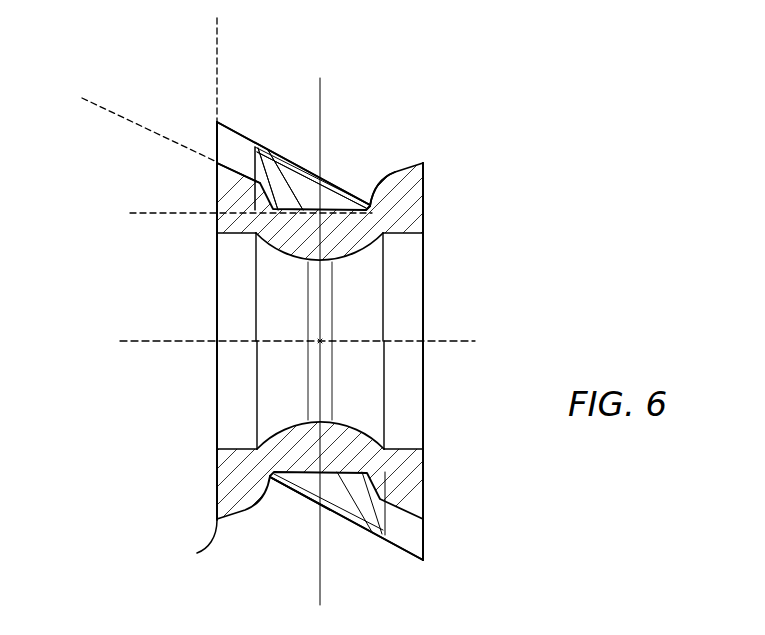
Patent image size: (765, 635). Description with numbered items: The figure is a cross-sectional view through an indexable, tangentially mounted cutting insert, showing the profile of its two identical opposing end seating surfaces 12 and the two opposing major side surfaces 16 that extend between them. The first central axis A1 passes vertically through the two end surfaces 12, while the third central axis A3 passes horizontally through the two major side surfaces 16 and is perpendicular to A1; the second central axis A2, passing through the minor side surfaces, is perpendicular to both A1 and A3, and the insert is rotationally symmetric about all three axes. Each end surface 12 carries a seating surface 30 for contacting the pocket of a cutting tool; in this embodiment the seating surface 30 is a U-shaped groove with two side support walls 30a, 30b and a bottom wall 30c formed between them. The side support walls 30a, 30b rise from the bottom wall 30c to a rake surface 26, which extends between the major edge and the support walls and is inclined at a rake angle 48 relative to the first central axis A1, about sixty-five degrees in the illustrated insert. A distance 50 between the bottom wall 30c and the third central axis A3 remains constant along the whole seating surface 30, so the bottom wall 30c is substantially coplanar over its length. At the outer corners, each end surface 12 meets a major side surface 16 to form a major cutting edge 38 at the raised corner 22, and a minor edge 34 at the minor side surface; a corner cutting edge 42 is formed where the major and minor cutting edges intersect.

The end seating surface 12 is at (358, 96).
The major side surface 16 is at (428, 283).
The raised corner 22 is at (213, 117).
The rake surface 26 is at (232, 168).
The seating surface 30 is at (345, 182).
The side support wall 30a is at (300, 206).
The side support wall 30b is at (372, 190).
The bottom wall 30c is at (362, 203).
The minor edge 34 is at (283, 513).
The major cutting edge 38 is at (197, 553).
The corner cutting edge 42 is at (214, 122).
The rake angle 48 is at (216, 25).
The distance 50 is at (169, 215).
The first central axis A1 is at (320, 90).
The second central axis A2 is at (319, 338).
The third central axis A3 is at (120, 341).